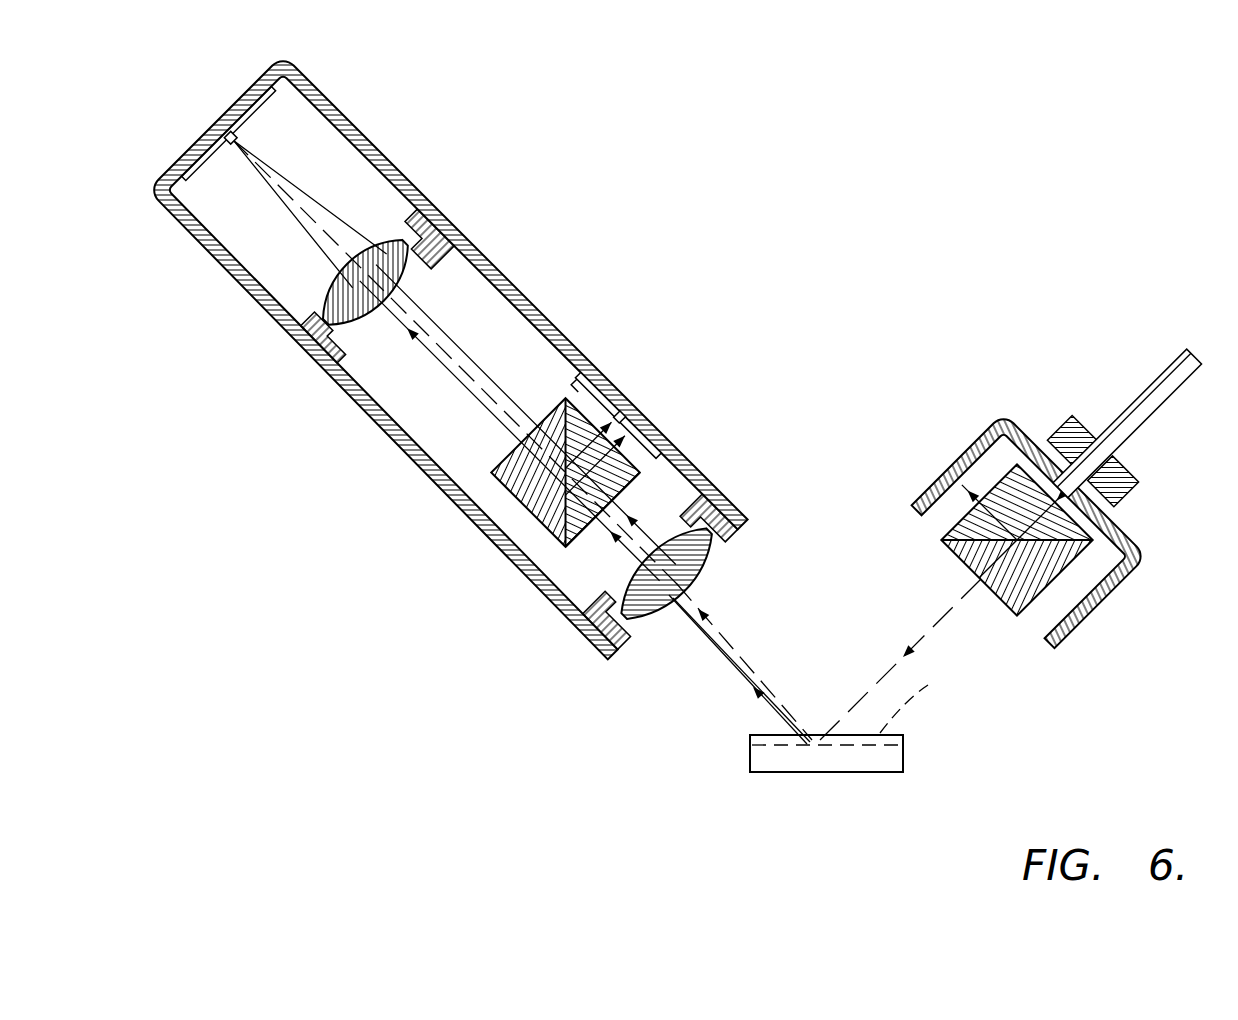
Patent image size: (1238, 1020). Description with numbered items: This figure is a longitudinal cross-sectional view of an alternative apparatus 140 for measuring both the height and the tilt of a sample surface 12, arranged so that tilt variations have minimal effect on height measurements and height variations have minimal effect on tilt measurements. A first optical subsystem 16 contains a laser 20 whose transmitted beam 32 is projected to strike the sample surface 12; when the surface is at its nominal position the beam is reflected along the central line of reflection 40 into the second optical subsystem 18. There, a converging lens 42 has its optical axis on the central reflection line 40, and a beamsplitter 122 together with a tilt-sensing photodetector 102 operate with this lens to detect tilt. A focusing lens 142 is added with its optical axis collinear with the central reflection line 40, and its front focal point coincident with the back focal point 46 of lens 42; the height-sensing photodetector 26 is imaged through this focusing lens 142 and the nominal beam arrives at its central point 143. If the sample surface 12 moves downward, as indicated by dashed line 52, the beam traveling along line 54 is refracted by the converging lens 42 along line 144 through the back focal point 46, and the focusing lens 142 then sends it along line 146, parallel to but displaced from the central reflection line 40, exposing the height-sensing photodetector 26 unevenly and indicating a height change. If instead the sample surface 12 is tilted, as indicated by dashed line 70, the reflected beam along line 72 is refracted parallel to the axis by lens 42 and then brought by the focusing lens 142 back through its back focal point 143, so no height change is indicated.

The alternative apparatus 140 is at (457, 357).
The second optical subsystem 18 is at (445, 357).
The height-sensing photodetector 26 is at (258, 112).
The central point 143 is at (231, 143).
The line 146 is at (328, 213).
The focusing lens 142 is at (365, 322).
The line 144 is at (450, 342).
The back focal point 46 is at (527, 437).
The beamsplitter 122 is at (610, 510).
The tilt-sensing photodetector 102 is at (588, 380).
The converging lens 42 is at (700, 583).
The central line of reflection 40 is at (745, 663).
The line 54 is at (735, 666).
The line 72 is at (748, 690).
The sample surface 12 is at (900, 731).
The dashed line 52 is at (875, 741).
The dashed line 70 is at (921, 691).
The transmitted beam 32 is at (928, 630).
The first optical subsystem 16 is at (1039, 515).
The laser 20 is at (1147, 385).